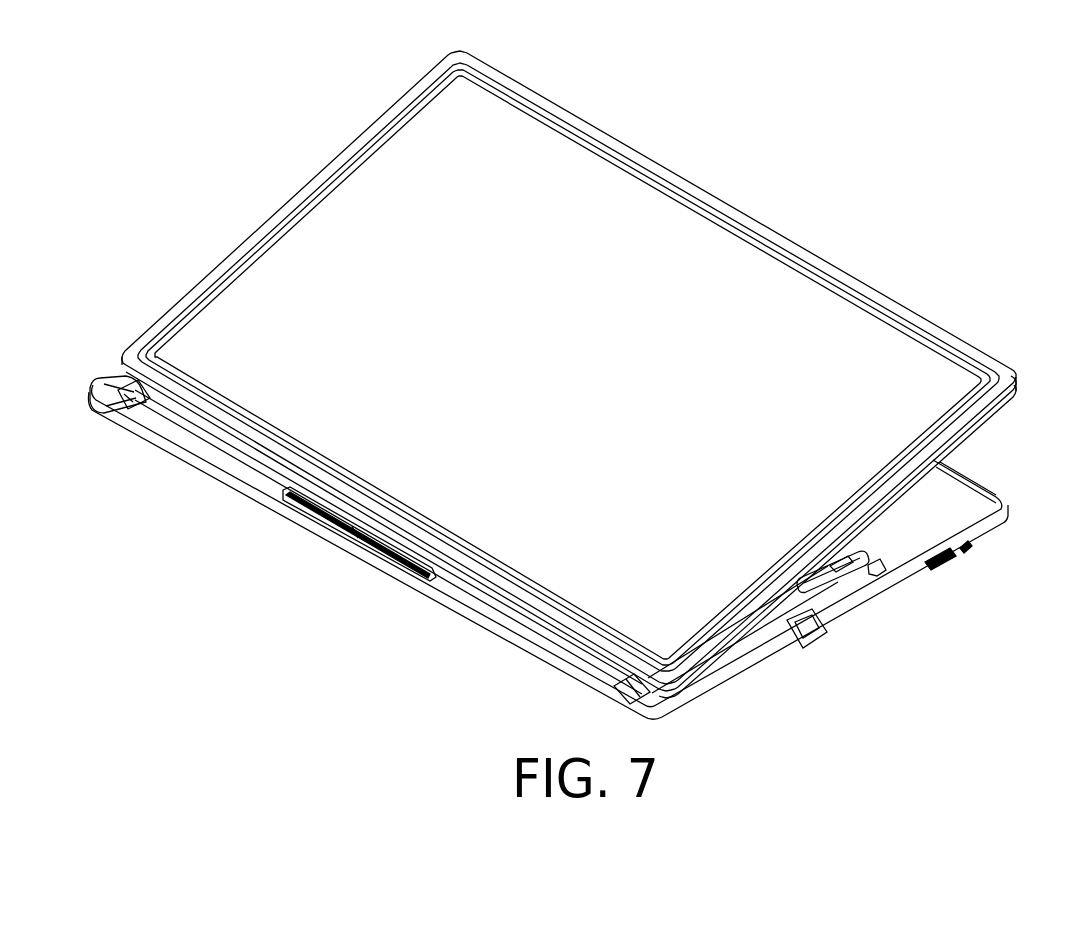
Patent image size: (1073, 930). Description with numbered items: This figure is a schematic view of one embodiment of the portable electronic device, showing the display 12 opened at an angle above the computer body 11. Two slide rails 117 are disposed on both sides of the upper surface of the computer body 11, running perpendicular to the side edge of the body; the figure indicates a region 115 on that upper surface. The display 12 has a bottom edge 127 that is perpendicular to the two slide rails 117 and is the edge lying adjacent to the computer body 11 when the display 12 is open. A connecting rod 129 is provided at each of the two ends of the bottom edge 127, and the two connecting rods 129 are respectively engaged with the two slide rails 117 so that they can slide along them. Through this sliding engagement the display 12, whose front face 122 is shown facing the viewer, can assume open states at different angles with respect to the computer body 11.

The computer body 11 is at (985, 505).
The display 12 is at (713, 203).
The top surface of base 115 is at (942, 504).
The slide rail 117 is at (110, 398).
The display screen 122 is at (464, 211).
The bottom edge 127 is at (466, 584).
The connecting rod 129 is at (118, 385).